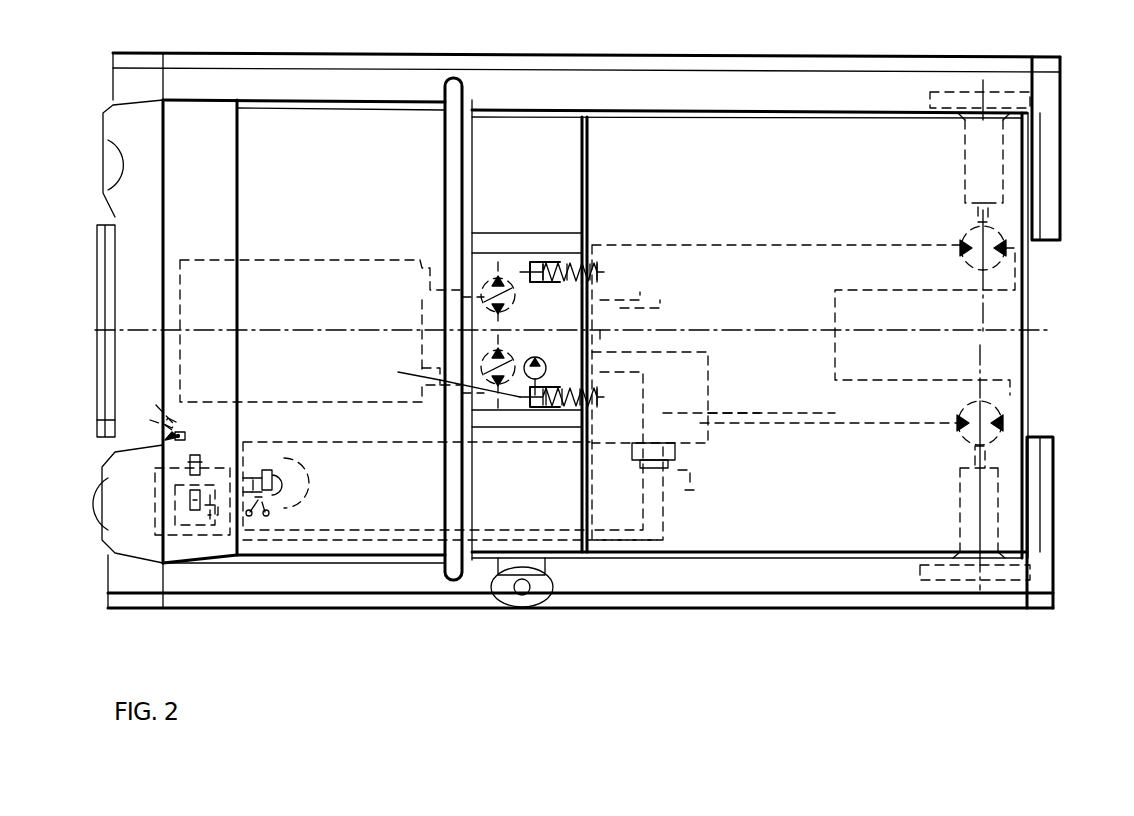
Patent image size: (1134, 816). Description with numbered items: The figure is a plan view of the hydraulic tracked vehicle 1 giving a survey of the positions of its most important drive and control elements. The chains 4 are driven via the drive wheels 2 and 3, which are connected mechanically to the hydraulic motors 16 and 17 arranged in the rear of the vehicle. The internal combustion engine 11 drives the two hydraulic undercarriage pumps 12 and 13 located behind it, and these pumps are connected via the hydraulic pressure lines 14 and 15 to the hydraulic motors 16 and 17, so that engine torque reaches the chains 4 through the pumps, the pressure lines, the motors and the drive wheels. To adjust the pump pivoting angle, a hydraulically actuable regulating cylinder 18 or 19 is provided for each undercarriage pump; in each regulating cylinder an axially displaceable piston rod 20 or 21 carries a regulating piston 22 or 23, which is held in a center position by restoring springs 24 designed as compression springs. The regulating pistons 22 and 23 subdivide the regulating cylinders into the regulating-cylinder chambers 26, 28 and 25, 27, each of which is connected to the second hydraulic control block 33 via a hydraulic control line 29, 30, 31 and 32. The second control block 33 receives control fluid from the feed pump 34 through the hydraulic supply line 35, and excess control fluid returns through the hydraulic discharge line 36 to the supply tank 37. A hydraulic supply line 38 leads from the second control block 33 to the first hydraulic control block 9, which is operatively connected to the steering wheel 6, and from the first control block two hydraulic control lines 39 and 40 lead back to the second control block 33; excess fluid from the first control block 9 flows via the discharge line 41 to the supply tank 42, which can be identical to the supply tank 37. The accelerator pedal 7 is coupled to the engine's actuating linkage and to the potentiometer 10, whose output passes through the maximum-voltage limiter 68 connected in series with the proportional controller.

The tracked vehicle 1 is at (960, 57).
The drive wheel 2 is at (1030, 578).
The drive wheel 3 is at (1040, 103).
The chains 4 is at (1045, 232).
The steering wheel 6 is at (310, 490).
The accelerator pedal 7 is at (97, 420).
The hydraulic control block 9 is at (188, 535).
The potentiometer 10 is at (167, 415).
The internal combustion engine 11 is at (328, 320).
The hydraulic undercarriage pump 12 is at (502, 262).
The hydraulic undercarriage pump 13 is at (496, 388).
The hydraulic pressure line 14 is at (760, 330).
The hydraulic pressure line 15 is at (775, 415).
The hydraulic motor 16 is at (1005, 236).
The hydraulic motor 17 is at (985, 435).
The regulating cylinder 18 is at (600, 266).
The regulating cylinder 19 is at (600, 386).
The piston rod 20 is at (530, 266).
The piston rod 21 is at (545, 407).
The regulating piston 22 is at (586, 262).
The regulating piston 23 is at (575, 408).
The restoring springs 24 is at (560, 290).
The regulating-cylinder chamber 25 is at (560, 408).
The regulating-cylinder chamber 26 is at (558, 266).
The regulating-cylinder chamber 27 is at (592, 408).
The regulating-cylinder chamber 28 is at (602, 266).
The hydraulic control line 29 is at (620, 302).
The hydraulic control line 30 is at (656, 306).
The hydraulic control line 31 is at (612, 425).
The hydraulic control line 32 is at (665, 425).
The second hydraulic control block 33 is at (676, 455).
The feed pump 34 is at (448, 374).
The hydraulic supply line 35 is at (722, 410).
The hydraulic discharge line 36 is at (690, 478).
The supply tank 37 is at (695, 490).
The hydraulic supply line 38 is at (355, 444).
The hydraulic control line 39 is at (395, 530).
The hydraulic control line 40 is at (410, 540).
The discharge line 41 is at (198, 525).
The supply tank 42 is at (212, 520).
The maximum-voltage limiter 68 is at (270, 515).